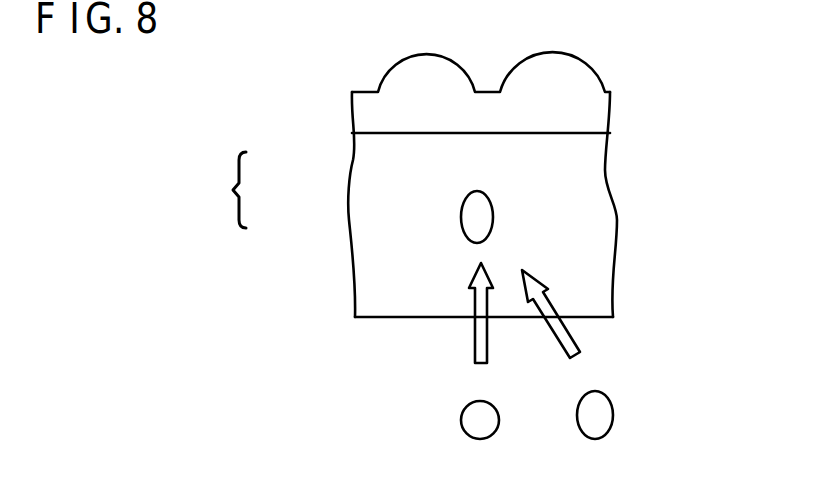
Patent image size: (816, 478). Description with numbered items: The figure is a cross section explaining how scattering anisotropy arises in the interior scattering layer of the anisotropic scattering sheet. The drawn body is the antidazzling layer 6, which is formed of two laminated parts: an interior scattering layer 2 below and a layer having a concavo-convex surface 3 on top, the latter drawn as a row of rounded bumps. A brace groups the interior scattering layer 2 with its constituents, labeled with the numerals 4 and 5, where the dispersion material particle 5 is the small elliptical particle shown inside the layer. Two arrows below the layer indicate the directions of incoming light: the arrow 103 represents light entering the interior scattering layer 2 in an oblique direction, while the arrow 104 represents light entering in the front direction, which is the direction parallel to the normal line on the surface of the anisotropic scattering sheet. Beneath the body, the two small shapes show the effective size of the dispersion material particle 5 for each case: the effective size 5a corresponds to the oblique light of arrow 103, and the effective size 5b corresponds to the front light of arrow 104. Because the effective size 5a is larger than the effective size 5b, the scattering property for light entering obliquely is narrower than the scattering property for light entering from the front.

The interior scattering layer 2 is at (227, 190).
The concavo-convex surface 3 is at (596, 108).
The photosensitive layer 4 is at (365, 180).
The dispersion material particle 5 is at (471, 226).
The effective size for oblique light 5a is at (597, 415).
The effective size for front light 5b is at (475, 416).
The antidazzling layer 6 is at (663, 167).
The arrow indicating oblique direction 103 is at (580, 314).
The arrow indicating front direction 104 is at (452, 317).